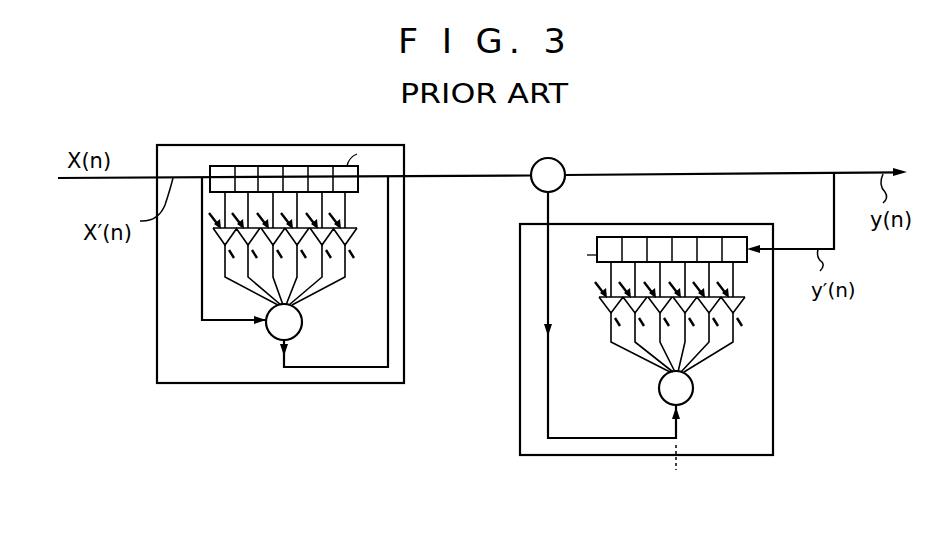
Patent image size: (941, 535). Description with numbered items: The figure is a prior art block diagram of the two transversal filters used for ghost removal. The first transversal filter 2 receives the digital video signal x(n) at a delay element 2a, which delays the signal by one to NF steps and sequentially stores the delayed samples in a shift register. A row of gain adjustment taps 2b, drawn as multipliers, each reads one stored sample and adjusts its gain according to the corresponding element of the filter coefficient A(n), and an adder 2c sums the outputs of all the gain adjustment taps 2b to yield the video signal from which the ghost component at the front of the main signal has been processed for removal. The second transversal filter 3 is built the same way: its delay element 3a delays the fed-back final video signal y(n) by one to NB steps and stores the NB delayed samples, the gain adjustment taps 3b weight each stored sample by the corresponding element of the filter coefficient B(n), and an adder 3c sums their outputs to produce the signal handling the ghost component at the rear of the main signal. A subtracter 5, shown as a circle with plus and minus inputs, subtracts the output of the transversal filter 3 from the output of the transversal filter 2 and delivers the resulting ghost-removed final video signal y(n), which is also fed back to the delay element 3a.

The transversal filter 2 is at (180, 145).
The delay element 2a is at (247, 166).
The gain adjustment taps 2b is at (357, 228).
The adder 2c is at (302, 325).
The transversal filter 3 is at (773, 407).
The delay element 3a is at (743, 238).
The gain adjustment taps 3b is at (733, 295).
The adder 3c is at (693, 391).
The subtracter 5 is at (562, 161).
The number of delayed samples NB is at (617, 237).